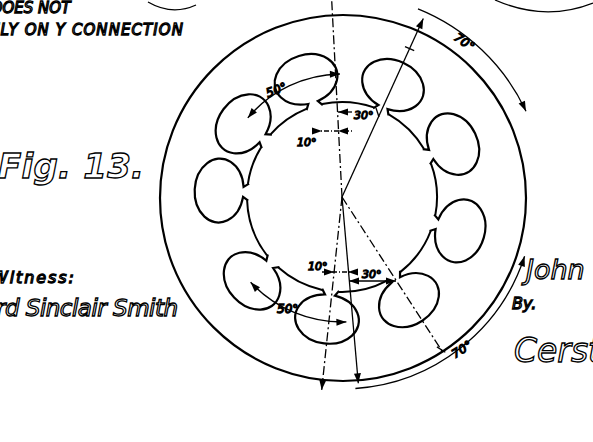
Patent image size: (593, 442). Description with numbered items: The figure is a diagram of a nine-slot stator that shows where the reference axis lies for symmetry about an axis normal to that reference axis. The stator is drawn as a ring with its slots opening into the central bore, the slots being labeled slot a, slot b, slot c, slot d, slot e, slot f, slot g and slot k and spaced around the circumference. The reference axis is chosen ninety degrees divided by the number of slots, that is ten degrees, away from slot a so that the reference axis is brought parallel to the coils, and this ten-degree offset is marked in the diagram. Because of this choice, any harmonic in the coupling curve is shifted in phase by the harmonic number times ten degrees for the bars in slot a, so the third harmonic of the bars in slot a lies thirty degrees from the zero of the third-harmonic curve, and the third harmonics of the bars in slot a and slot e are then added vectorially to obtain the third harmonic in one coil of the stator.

The slot a is at (342, 197).
The slot b is at (342, 197).
The slot c is at (209, 191).
The slot d is at (342, 197).
The slot e is at (327, 330).
The slot f is at (407, 303).
The slot g is at (342, 197).
The slot k is at (342, 197).